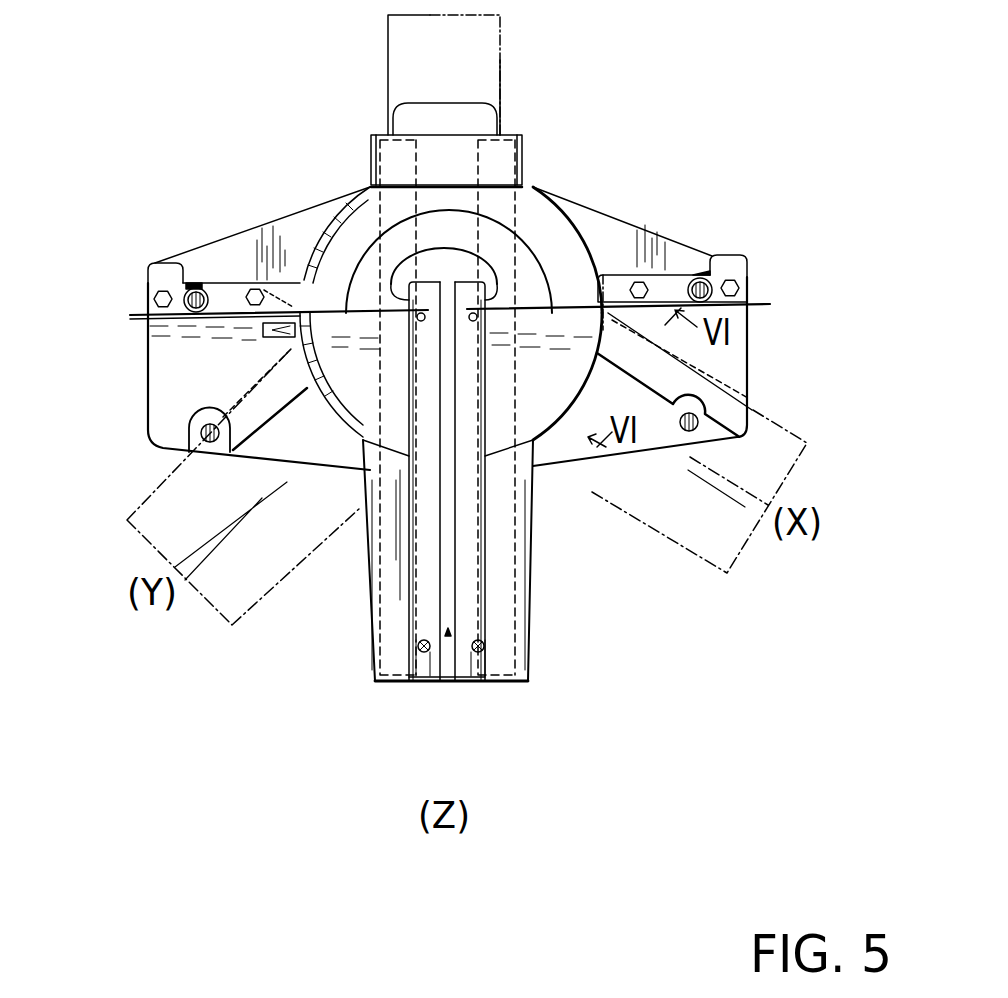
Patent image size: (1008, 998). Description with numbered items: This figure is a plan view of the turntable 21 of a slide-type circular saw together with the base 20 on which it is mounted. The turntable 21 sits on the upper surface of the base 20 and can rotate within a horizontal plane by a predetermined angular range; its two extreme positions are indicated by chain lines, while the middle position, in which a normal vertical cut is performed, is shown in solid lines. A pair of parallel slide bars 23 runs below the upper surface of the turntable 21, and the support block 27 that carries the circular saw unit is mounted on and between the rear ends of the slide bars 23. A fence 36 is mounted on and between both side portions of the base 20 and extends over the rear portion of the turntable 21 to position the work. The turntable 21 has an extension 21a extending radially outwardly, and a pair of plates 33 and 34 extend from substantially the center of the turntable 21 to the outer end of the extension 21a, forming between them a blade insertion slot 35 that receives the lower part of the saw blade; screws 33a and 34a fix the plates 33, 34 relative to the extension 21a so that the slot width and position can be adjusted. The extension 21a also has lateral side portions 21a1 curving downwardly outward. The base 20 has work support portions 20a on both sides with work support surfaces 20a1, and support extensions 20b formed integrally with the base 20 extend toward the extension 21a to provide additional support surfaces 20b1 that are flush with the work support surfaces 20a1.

The base 20 is at (667, 247).
The work support portion 20a is at (177, 373).
The work support surface 20a1 is at (177, 358).
The support extension 20b is at (255, 420).
The additional support surface 20b1 is at (246, 442).
The turntable 21 is at (548, 378).
The extension 21a is at (532, 572).
The lateral side portion 21a1 is at (392, 552).
The slide bar 23 is at (380, 267).
The support block 27 is at (440, 147).
The plate 33 is at (433, 665).
The screw 33a is at (418, 683).
The plate 34 is at (473, 667).
The screw 34a is at (493, 655).
The blade insertion slot 35 is at (450, 665).
The fence 36 is at (562, 277).